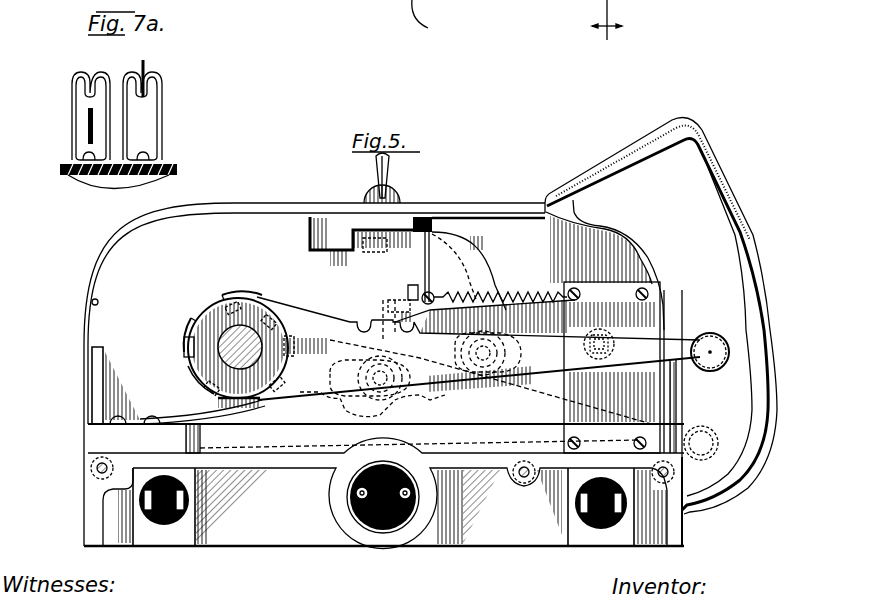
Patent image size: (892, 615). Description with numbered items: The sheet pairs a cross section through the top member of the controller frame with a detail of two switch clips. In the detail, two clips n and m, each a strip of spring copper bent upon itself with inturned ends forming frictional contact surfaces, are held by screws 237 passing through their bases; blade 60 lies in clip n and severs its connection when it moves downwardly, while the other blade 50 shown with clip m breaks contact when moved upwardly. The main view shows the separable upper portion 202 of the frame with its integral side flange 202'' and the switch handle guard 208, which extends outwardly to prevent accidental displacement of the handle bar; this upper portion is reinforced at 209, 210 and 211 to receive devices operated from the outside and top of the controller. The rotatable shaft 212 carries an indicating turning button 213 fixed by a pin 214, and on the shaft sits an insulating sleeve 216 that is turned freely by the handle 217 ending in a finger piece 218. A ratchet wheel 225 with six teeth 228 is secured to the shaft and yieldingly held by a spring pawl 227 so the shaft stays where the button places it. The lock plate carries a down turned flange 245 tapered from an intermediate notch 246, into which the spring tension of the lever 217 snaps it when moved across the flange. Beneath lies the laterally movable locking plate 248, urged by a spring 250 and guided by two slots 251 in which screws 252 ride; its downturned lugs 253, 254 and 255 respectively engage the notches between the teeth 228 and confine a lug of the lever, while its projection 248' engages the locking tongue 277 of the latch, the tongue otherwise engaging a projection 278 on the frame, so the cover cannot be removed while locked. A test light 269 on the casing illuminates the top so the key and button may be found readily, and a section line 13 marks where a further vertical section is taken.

In FIG. 7A, the clip n is at (72, 68).
In FIG. 7A, the clip m is at (164, 118).
In FIG. 7A, the blade 60 is at (86, 122).
In FIG. 7A, the pin 50 is at (146, 68).
In FIG. 7A, the screws 237 is at (150, 157).
In FIG. 5, the upper portion of frame 202 is at (352, 376).
In FIG. 5, the side flange 202'' is at (709, 501).
In FIG. 5, the switch handle guard 208 is at (748, 170).
In FIG. 5, the reinforcement 209 is at (183, 535).
In FIG. 5, the reinforcement 210 is at (383, 540).
In FIG. 5, the reinforcement 211 is at (590, 536).
In FIG. 5, the rotatable shaft 212 is at (258, 336).
In FIG. 5, the indicating turning button 213 is at (618, 285).
In FIG. 5, the pin 214 is at (650, 292).
In FIG. 5, the insulating sleeve 216 is at (392, 163).
In FIG. 5, the handle 217 is at (572, 340).
In FIG. 5, the finger piece 218 is at (705, 335).
In FIG. 5, the ratchet wheel 225 is at (192, 366).
In FIG. 5, the spring pawl 227 is at (222, 410).
In FIG. 5, the teeth 228 is at (240, 296).
In FIG. 5, the down turned flange 245 is at (668, 397).
In FIG. 5, the notch 246 is at (705, 332).
In FIG. 5, the locking plate 248 is at (480, 271).
In FIG. 5, the projection 248' is at (485, 196).
In FIG. 5, the spring 250 is at (517, 283).
In FIG. 5, the guiding slots 251 is at (398, 387).
In FIG. 5, the screws 252 is at (388, 383).
In FIG. 5, the downturned lug 253 is at (385, 304).
In FIG. 5, the downturned lug 254 is at (430, 216).
In FIG. 5, the downturned lug 255 is at (527, 367).
In FIG. 5, the test light 269 is at (437, 19).
In FIG. 5, the terminal 13 is at (607, 26).
In FIG. 5, the locking tongue 277 is at (377, 235).
In FIG. 5, the projection 278 is at (333, 238).